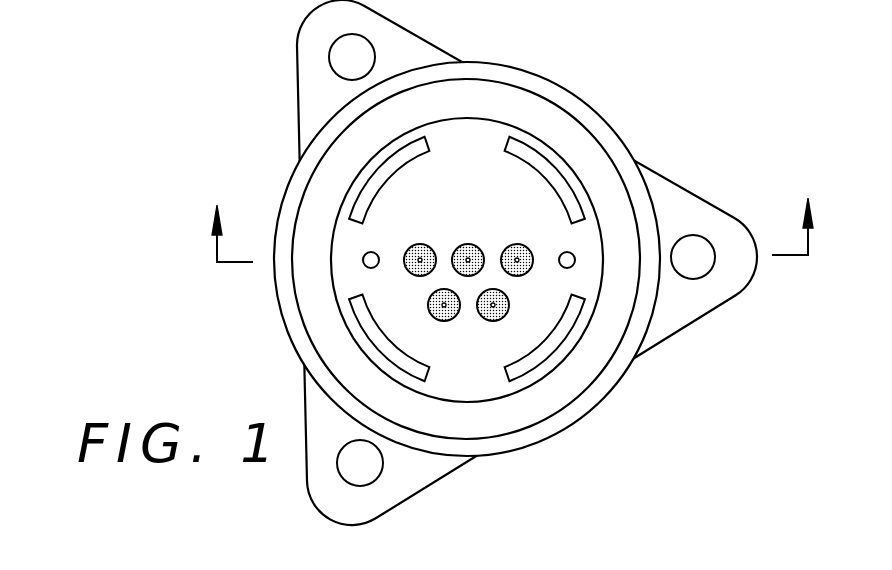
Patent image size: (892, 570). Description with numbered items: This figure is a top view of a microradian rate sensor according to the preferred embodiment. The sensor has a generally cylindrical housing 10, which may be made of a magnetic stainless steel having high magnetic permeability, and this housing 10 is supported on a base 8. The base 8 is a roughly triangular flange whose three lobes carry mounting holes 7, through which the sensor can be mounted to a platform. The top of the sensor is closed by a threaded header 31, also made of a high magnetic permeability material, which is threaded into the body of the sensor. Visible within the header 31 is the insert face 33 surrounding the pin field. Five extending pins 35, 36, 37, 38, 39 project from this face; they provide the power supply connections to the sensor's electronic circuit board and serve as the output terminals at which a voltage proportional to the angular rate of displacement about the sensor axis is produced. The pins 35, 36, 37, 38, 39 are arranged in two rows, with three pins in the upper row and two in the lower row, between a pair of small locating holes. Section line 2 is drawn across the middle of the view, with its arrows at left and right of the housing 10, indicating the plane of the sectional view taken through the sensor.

The section line 2- 2 is at (512, 216).
The mounting holes 7 is at (704, 280).
The base 8 is at (692, 191).
The housing 10 is at (598, 112).
The threaded header 31 is at (507, 462).
The insert face 33 is at (608, 420).
The extending pin 35 is at (500, 320).
The extending pin 36 is at (516, 243).
The extending pin 37 is at (468, 243).
The extending pin 38 is at (420, 243).
The extending pin 39 is at (450, 321).